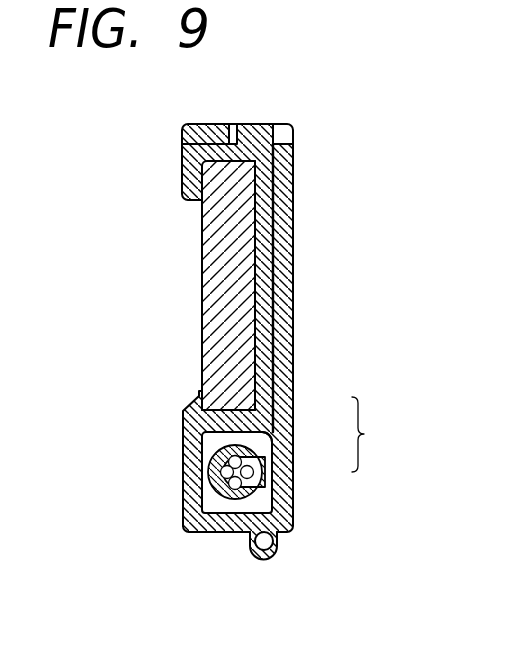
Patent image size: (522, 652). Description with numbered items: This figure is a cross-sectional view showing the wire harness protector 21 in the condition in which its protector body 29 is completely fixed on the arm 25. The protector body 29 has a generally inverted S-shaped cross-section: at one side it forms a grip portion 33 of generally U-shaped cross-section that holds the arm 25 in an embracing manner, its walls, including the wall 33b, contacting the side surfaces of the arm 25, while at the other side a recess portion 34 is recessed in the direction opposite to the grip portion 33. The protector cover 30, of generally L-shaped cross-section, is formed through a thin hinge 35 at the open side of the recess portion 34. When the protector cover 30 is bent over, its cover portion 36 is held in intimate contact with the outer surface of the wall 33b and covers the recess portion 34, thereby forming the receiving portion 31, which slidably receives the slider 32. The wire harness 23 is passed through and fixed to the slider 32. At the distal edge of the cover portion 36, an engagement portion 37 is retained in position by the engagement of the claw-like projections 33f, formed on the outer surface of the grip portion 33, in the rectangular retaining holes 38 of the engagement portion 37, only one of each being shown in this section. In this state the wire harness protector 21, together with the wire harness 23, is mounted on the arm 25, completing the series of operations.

The wire harness protector 21 is at (345, 165).
The wire harness 23 is at (222, 455).
The arm 25 is at (203, 307).
The protector body 29 is at (376, 434).
The protector cover 30 is at (296, 347).
The receiving portion 31 is at (262, 505).
The slider 32 is at (197, 501).
The grip portion 33 is at (267, 403).
The wall 33b is at (296, 215).
The claw-like projection 33f is at (249, 123).
The recess portion 34 is at (260, 438).
The hinge 35 is at (265, 557).
The cover portion 36 is at (296, 263).
The engagement portion 37 is at (212, 124).
The retaining hole 38 is at (293, 132).